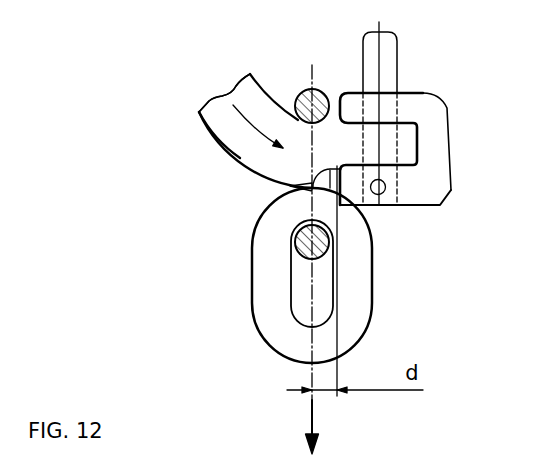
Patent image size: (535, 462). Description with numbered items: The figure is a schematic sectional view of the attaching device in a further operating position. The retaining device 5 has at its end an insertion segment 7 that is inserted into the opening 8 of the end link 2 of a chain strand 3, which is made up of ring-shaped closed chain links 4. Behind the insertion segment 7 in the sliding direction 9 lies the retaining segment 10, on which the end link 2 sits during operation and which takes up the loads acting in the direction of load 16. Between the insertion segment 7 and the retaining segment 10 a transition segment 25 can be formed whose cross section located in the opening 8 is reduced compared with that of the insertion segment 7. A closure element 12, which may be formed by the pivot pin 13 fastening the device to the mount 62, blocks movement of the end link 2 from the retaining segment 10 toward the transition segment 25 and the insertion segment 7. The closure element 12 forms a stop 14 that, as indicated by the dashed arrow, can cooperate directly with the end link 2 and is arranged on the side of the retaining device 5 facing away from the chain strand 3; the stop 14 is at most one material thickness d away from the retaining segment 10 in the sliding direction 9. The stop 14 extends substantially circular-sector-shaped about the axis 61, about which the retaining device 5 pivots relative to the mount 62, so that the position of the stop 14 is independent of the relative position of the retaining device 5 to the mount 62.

The end link 2 is at (294, 107).
The chain strand 3 is at (376, 303).
The chain link 4 is at (262, 302).
The retaining device 5 is at (199, 99).
The insertion segment 7 is at (400, 133).
The opening 8 is at (292, 188).
The sliding direction 9 is at (243, 113).
The retaining segment 10 is at (222, 155).
The closure element 12 is at (445, 217).
The pivot pin 13 is at (386, 38).
The stop 14 is at (327, 84).
The direction of load 16 is at (312, 418).
The transition segment 25 is at (360, 137).
The axis 61 is at (380, 72).
The mount 62 is at (455, 147).